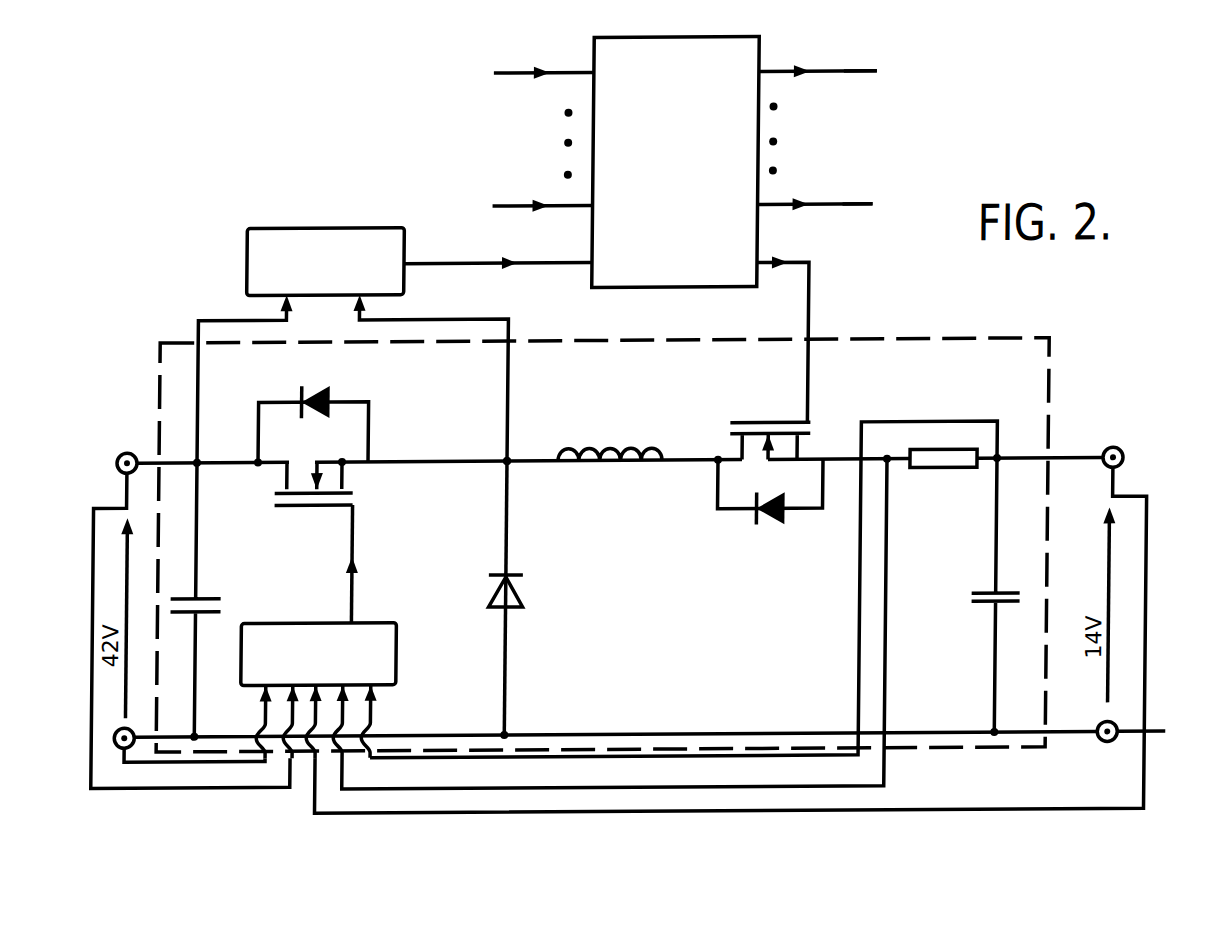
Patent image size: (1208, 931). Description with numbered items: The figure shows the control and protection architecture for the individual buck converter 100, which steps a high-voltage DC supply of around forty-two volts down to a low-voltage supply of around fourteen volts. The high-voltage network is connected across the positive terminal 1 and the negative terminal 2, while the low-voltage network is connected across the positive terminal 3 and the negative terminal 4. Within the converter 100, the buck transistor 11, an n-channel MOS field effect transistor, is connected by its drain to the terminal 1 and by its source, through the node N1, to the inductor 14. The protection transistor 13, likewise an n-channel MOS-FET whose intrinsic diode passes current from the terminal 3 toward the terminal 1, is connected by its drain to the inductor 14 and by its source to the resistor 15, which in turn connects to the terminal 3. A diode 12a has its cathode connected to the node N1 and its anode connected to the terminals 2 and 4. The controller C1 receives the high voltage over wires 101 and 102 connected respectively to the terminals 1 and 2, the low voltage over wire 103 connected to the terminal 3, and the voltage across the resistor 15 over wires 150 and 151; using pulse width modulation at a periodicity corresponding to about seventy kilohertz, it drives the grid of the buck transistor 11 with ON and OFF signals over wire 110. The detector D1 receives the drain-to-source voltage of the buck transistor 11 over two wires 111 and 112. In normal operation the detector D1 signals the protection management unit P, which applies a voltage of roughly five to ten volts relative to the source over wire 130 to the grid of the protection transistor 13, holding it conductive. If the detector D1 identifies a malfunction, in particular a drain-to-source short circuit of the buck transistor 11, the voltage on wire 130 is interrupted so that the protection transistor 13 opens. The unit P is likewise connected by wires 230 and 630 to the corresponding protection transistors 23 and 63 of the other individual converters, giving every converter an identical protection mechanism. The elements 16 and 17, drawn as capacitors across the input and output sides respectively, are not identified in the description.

The positive terminal 1 is at (121, 452).
The negative terminal 2 is at (116, 736).
The positive terminal 3 is at (1125, 450).
The negative terminal 4 is at (1140, 732).
The buck transistor 11 is at (353, 465).
The diode 12a is at (525, 590).
The protection transistor 13 is at (731, 455).
The inductor 14 is at (604, 470).
The resistor 15 is at (930, 452).
The input capacitor 16 is at (203, 605).
The output capacitor 17 is at (985, 609).
The protection transistor 23 is at (879, 202).
The protection transistor 63 is at (882, 70).
The individual buck converter 100 is at (1056, 376).
The wire 101 is at (257, 788).
The wire 102 is at (178, 762).
The wire 103 is at (792, 812).
The wire 110 is at (355, 547).
The wire 111 is at (223, 318).
The wire 112 is at (428, 317).
The wire 130 is at (814, 291).
The wire 150 is at (582, 788).
The wire 151 is at (614, 758).
The wire 230 is at (835, 206).
The wire 630 is at (823, 73).
The controller C1 is at (292, 622).
The detector D1 is at (295, 227).
The protection management unit P is at (668, 38).
The node N1 is at (499, 444).